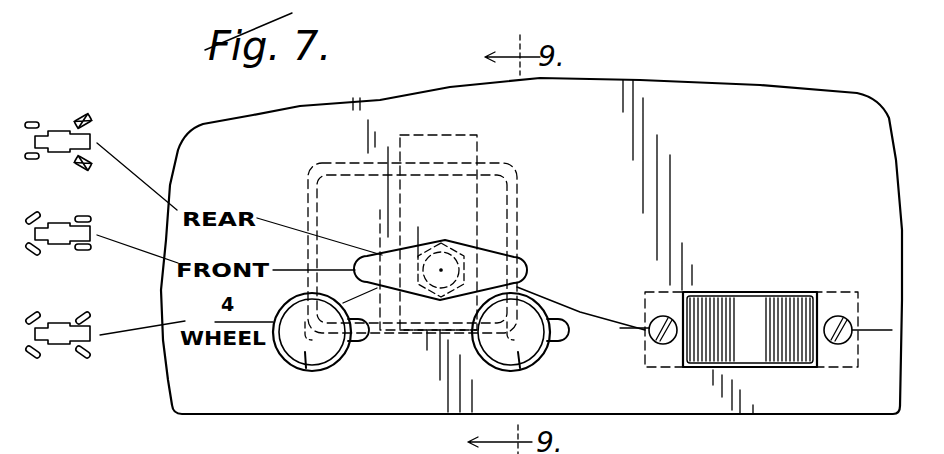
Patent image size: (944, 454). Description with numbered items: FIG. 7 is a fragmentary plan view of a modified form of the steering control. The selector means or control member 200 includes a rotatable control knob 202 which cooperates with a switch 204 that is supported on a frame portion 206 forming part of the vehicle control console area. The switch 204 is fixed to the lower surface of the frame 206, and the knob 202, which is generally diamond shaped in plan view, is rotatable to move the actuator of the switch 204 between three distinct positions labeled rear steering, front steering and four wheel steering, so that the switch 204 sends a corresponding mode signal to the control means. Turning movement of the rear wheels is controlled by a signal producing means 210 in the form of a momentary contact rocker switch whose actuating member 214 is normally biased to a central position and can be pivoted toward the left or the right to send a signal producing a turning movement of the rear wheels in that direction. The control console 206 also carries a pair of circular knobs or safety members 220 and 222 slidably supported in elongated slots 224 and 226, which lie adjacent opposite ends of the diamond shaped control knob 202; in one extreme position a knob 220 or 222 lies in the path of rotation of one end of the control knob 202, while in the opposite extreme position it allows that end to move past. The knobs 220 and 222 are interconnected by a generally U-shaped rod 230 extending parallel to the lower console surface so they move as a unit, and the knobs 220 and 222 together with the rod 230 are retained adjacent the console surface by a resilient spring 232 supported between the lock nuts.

The selector means or control member 200 is at (284, 165).
The rotatable control member or knob 202 is at (472, 255).
The switch 204 is at (383, 212).
The frame portion or control console 206 is at (745, 163).
The signal producing means 210 is at (706, 283).
The actuating member 214 is at (777, 310).
The knob or safety member 220 is at (305, 362).
The knob or safety member 222 is at (520, 352).
The elongated slot 224 is at (370, 333).
The elongated slot 226 is at (570, 318).
The U-shaped rod 230 is at (508, 160).
The resilient spring 232 is at (452, 146).